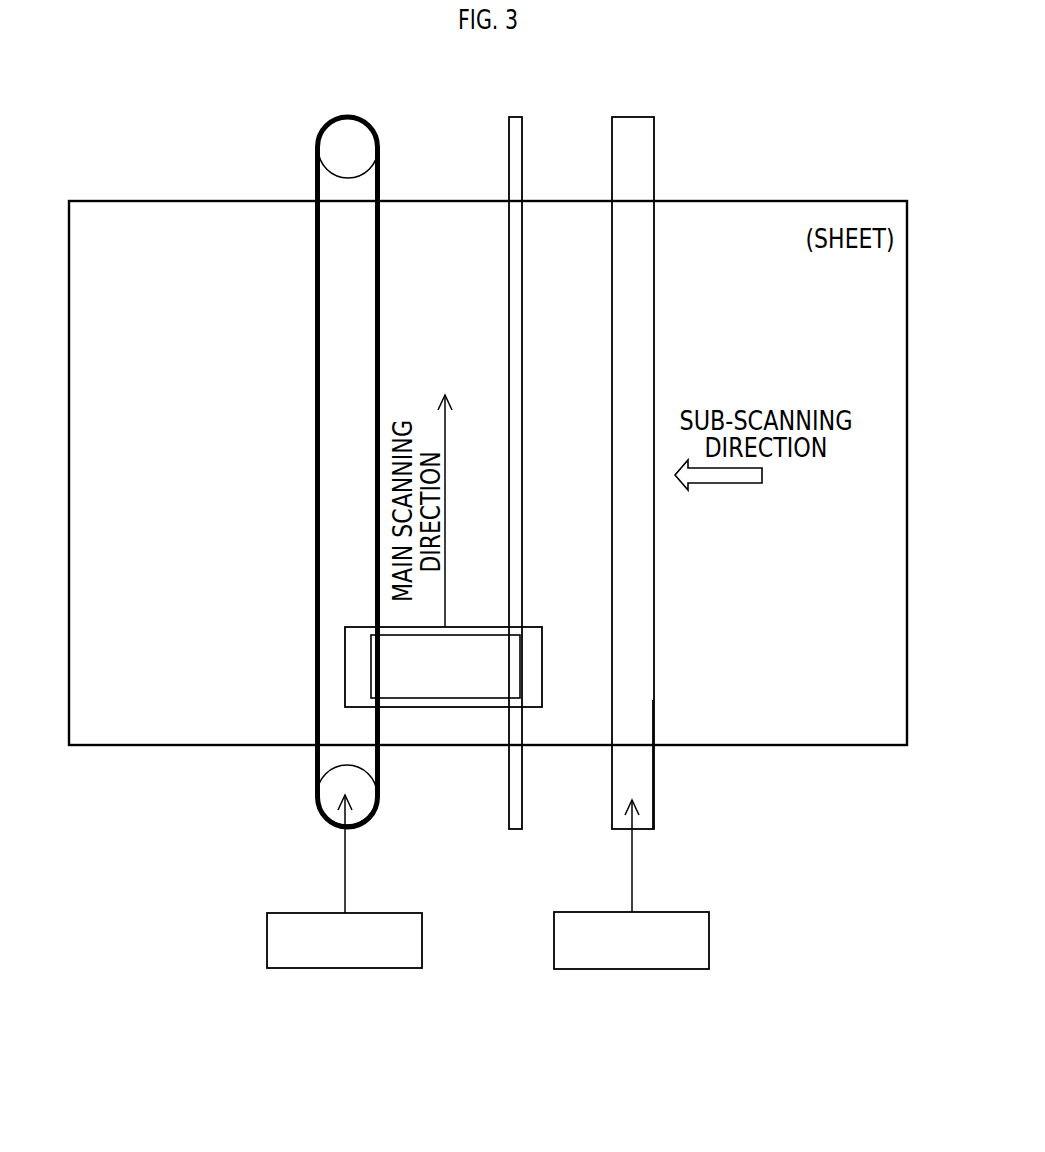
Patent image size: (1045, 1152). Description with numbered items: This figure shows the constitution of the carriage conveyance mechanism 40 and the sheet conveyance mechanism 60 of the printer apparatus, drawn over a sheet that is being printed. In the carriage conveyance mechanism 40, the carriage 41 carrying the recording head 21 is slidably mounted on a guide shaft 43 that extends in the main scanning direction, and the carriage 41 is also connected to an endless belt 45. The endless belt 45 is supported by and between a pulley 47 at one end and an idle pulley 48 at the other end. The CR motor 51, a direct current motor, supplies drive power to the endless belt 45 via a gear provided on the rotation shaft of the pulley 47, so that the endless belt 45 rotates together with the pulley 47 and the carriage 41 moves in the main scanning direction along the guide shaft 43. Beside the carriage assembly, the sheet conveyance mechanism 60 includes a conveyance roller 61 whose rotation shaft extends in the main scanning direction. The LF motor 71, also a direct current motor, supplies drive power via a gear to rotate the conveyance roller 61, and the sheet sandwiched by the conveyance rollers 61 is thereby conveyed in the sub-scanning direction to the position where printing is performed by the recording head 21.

The recording head 21 is at (393, 682).
The carriage conveyance mechanism 40 is at (286, 661).
The carriage 41 is at (542, 660).
The guide shaft 43 is at (522, 355).
The endless belt 45 is at (380, 368).
The pulley 47 is at (348, 785).
The idle pulley 48 is at (348, 149).
The CR motor 51 is at (422, 935).
The sheet conveyance mechanism 60 is at (675, 653).
The conveyance rollers 61 is at (654, 808).
The LF motor 71 is at (709, 933).